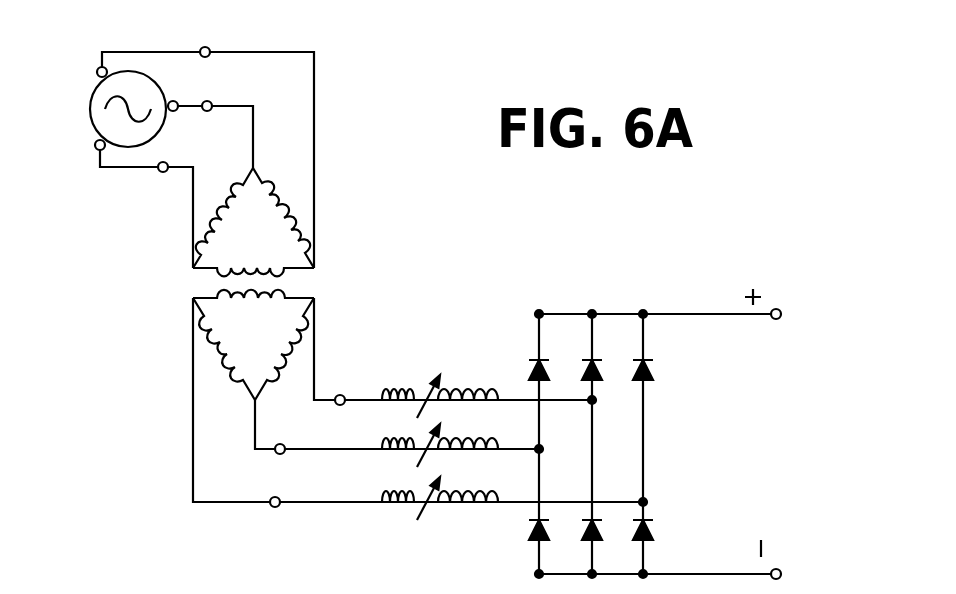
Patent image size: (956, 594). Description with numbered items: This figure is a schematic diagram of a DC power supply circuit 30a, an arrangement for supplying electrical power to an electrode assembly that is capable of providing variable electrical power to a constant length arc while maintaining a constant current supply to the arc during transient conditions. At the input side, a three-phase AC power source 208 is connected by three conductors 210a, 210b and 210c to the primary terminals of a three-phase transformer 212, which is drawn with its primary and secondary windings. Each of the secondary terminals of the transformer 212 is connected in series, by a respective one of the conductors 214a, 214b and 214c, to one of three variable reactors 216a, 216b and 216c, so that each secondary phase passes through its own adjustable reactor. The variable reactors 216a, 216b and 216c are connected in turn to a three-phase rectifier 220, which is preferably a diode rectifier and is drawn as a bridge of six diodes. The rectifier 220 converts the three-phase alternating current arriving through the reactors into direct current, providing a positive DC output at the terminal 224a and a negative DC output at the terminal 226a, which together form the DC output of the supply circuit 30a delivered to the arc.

The DC power supply circuit 30a is at (432, 240).
The three-phase AC power source 208 is at (89, 108).
The conductor 210a is at (209, 48).
The conductor 210b is at (209, 101).
The conductor 210c is at (166, 163).
The three-phase transformer 212 is at (319, 279).
The conductor 214a is at (340, 395).
The conductor 214b is at (283, 445).
The conductor 214c is at (278, 498).
The variable reactor 216a is at (412, 392).
The variable reactor 216b is at (412, 440).
The variable reactor 216c is at (412, 492).
The three-phase rectifier 220 is at (640, 449).
The terminal 224a is at (780, 310).
The terminal 226a is at (780, 570).